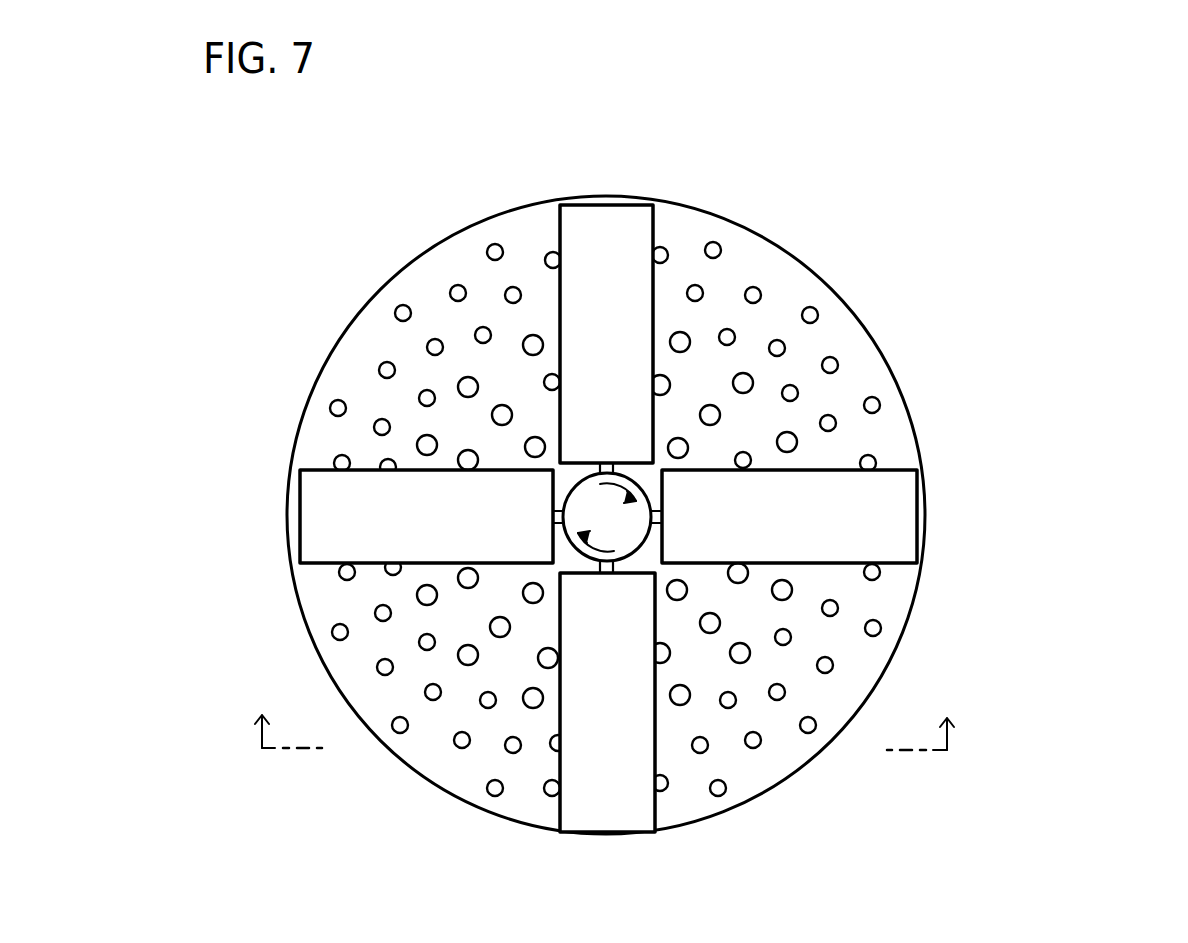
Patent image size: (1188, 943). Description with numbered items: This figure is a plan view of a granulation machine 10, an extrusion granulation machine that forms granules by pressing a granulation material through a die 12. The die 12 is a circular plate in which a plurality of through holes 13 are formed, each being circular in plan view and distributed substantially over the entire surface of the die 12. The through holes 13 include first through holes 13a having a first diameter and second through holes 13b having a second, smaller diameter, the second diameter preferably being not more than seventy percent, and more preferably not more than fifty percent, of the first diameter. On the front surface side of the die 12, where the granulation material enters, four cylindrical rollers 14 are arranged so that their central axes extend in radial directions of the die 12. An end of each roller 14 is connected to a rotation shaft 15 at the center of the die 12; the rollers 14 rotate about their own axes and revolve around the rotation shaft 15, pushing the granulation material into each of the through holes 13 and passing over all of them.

The granulation machine 10 is at (785, 163).
The die 12 is at (353, 360).
The through holes 13 is at (1067, 213).
The first through holes 13a is at (753, 382).
The second through holes 13b is at (840, 364).
The roller 14 is at (900, 520).
The rotation shaft 15 is at (625, 533).